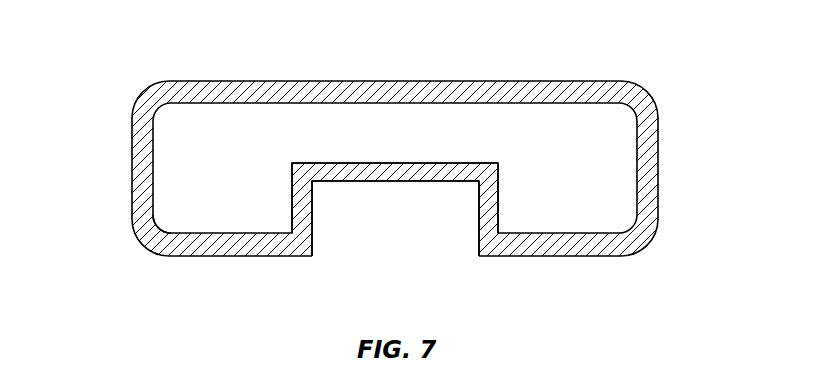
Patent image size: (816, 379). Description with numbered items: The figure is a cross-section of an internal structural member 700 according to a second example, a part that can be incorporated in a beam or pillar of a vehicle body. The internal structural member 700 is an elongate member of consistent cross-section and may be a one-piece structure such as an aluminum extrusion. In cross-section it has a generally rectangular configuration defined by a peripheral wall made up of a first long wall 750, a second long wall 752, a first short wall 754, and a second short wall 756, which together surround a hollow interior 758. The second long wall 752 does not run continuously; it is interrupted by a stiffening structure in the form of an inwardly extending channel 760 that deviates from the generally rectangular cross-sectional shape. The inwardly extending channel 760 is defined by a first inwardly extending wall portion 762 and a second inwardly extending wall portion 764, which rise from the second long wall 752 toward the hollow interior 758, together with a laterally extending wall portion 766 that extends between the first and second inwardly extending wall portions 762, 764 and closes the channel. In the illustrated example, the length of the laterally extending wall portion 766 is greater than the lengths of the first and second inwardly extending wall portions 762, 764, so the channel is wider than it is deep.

The internal structural member 700 is at (133, 69).
The first long wall 750 is at (497, 82).
The second long wall 752 is at (226, 233).
The first short wall 754 is at (132, 172).
The second short wall 756 is at (659, 165).
The hollow interior 758 is at (417, 138).
The inwardly extending channel 760 is at (371, 258).
The first inwardly extending wall portion 762 is at (292, 192).
The second inwardly extending wall portion 764 is at (498, 192).
The laterally extending wall portion 766 is at (375, 182).